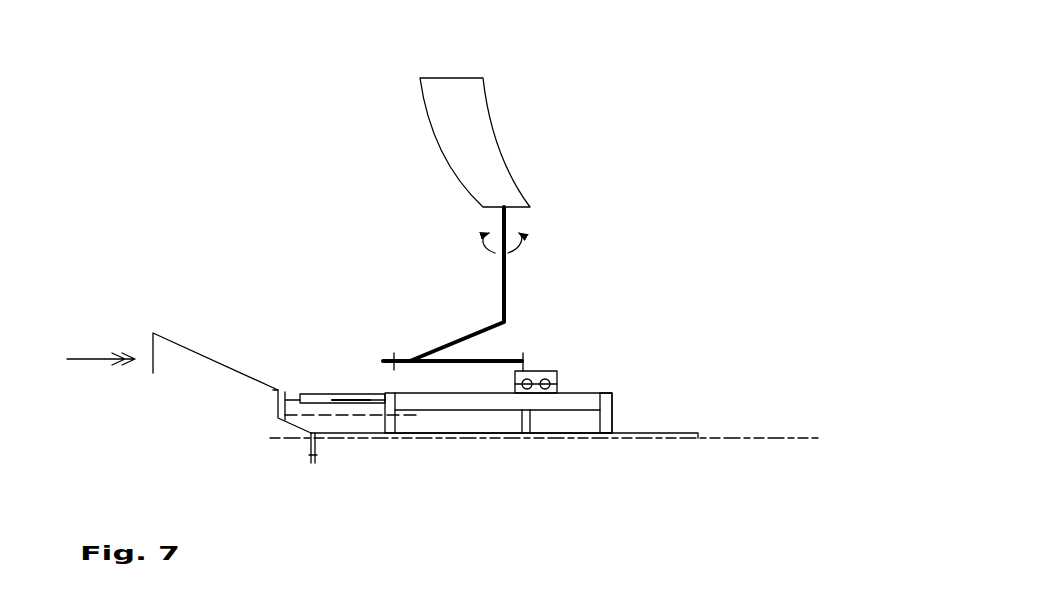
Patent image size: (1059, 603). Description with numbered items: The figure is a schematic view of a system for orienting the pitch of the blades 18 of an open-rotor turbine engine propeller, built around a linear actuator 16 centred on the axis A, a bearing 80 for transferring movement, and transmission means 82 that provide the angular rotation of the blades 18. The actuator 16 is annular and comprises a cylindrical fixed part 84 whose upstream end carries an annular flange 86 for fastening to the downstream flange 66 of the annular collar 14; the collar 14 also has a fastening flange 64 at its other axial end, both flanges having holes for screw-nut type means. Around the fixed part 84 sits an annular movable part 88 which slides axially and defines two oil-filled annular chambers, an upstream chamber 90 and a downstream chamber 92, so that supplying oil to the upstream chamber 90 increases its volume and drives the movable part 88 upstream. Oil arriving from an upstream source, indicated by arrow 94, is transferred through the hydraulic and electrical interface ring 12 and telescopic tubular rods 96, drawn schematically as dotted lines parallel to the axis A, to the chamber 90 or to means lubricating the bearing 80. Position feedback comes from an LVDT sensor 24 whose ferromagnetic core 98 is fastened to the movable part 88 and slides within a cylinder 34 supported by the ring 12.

The blades 18 is at (447, 100).
The transmission means 82 is at (451, 336).
The bearing 80 is at (538, 366).
The annular collar 14 is at (213, 349).
The annular fastening flange 64 is at (153, 370).
The arrow 94 is at (87, 357).
The hydraulic and electrical interface ring 12 is at (287, 386).
The LVDT sensor 24 is at (340, 390).
The cylinder 34 is at (327, 393).
The ferromagnetic core 98 is at (367, 398).
The telescopic tubular rods 96 is at (347, 416).
The upstream annular chamber 90 is at (480, 418).
The linear actuator 16 is at (575, 383).
The downstream annular chamber 92 is at (561, 418).
The annular movable part 88 is at (590, 400).
The cylindrical fixed part 84 is at (652, 440).
The annular flange 86 is at (315, 460).
The downstream fastening flange 66 is at (307, 455).
The axis A is at (732, 437).